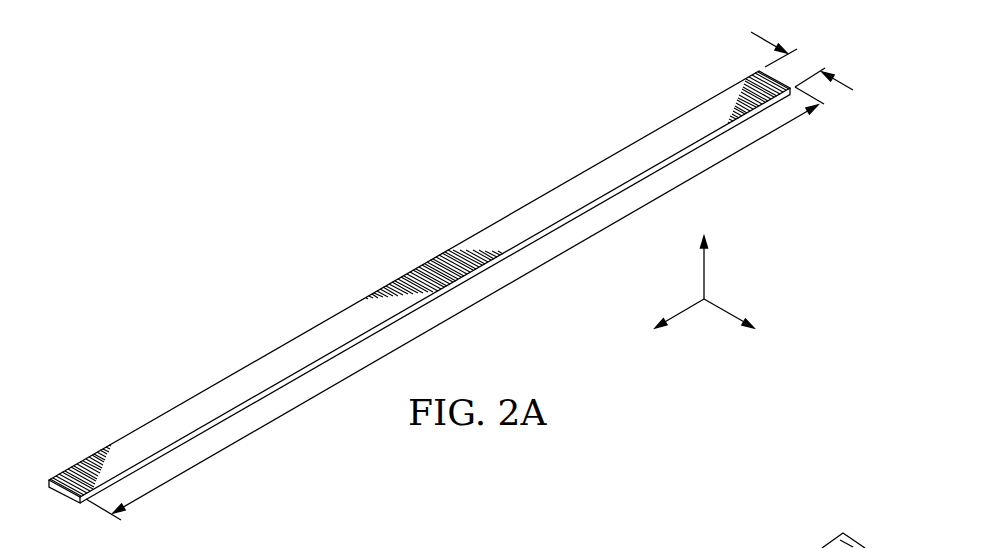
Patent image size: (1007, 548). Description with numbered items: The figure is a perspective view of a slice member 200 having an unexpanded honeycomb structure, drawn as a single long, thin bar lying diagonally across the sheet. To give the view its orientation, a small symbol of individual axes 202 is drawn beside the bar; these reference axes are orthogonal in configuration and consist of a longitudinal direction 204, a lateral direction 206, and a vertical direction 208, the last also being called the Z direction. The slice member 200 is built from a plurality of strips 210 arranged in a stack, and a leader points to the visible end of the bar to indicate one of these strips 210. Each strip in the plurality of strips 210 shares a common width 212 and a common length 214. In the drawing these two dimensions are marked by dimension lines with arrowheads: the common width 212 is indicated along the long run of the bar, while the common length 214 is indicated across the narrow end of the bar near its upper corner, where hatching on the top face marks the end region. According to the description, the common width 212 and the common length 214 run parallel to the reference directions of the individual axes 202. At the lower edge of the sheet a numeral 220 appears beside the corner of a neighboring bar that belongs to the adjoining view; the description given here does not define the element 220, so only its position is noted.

The slice member 200 is at (335, 262).
The individual axes 202 is at (715, 280).
The longitudinal direction 204 is at (727, 305).
The lateral direction 206 is at (683, 308).
The vertical direction 208 is at (702, 263).
The strips 210 is at (66, 495).
The common width 212 is at (465, 310).
The common length 214 is at (802, 63).
The bar of FIG. 2B 220 is at (772, 547).